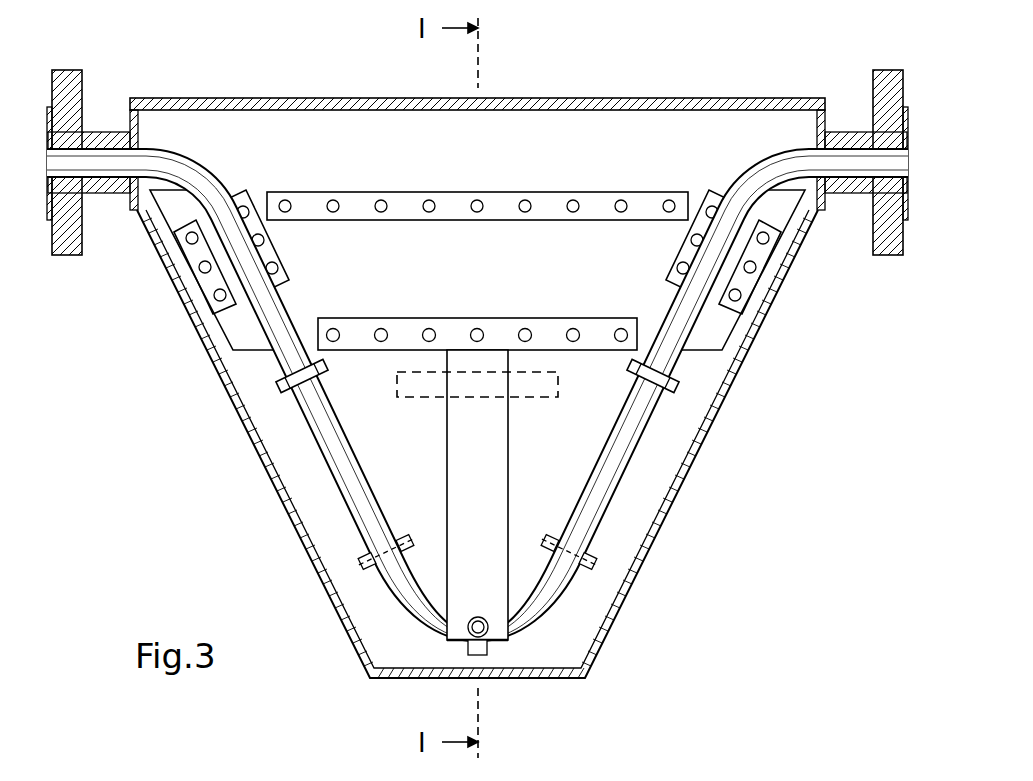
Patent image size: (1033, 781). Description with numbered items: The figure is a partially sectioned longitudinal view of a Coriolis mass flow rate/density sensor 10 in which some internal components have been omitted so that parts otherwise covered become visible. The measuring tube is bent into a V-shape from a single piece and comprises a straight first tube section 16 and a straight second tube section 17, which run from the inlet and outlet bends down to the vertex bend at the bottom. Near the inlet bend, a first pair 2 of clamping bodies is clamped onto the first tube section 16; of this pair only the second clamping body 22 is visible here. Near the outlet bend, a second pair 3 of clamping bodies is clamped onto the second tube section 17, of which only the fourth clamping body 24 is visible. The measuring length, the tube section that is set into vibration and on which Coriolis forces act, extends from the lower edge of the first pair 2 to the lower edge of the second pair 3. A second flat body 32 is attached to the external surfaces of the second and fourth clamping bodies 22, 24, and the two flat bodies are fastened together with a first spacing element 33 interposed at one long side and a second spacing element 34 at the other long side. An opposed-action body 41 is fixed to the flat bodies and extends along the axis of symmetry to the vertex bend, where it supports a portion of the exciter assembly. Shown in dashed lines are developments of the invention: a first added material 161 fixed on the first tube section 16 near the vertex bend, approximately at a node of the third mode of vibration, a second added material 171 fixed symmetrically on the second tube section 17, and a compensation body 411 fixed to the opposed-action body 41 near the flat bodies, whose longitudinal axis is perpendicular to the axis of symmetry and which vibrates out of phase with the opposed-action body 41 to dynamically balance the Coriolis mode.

The Coriolis mass flow rate/density sensor 10 is at (270, 61).
The first pair of clamping bodies 2 is at (183, 264).
The second pair of clamping bodies 3 is at (772, 265).
The second clamping body 22 is at (210, 287).
The fourth clamping body 24 is at (748, 288).
The second flat body 32 is at (238, 334).
The first spacing element 33 is at (502, 197).
The second spacing element 34 is at (598, 344).
The first tube section 16 is at (343, 495).
The second tube section 17 is at (612, 496).
The first added material 161 is at (368, 570).
The second added material 171 is at (588, 570).
The opposed-action body 41 is at (453, 623).
The compensation body 411 is at (397, 393).